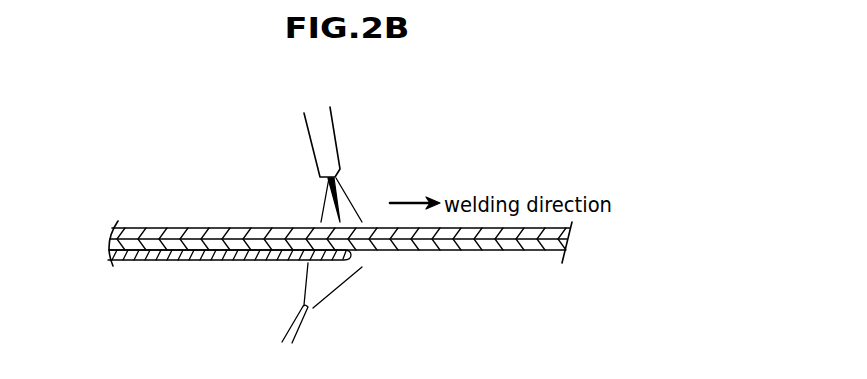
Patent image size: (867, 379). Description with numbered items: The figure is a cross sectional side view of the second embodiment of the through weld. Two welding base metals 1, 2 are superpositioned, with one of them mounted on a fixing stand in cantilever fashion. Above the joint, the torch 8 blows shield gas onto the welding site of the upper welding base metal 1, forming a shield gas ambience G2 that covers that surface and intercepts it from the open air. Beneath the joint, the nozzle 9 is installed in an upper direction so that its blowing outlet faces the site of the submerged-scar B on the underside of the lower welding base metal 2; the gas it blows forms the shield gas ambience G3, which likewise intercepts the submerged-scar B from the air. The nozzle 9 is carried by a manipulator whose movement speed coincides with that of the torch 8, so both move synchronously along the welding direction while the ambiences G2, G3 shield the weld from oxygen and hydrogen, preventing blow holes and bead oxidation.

The upper welding base metal 1 is at (560, 237).
The lower welding base metal 2 is at (562, 247).
The torch 8 is at (336, 137).
The shield gas ambience G2 is at (352, 203).
The nozzle 9 is at (299, 312).
The shield gas ambience G3 is at (343, 287).
The submerged-scar B is at (203, 259).